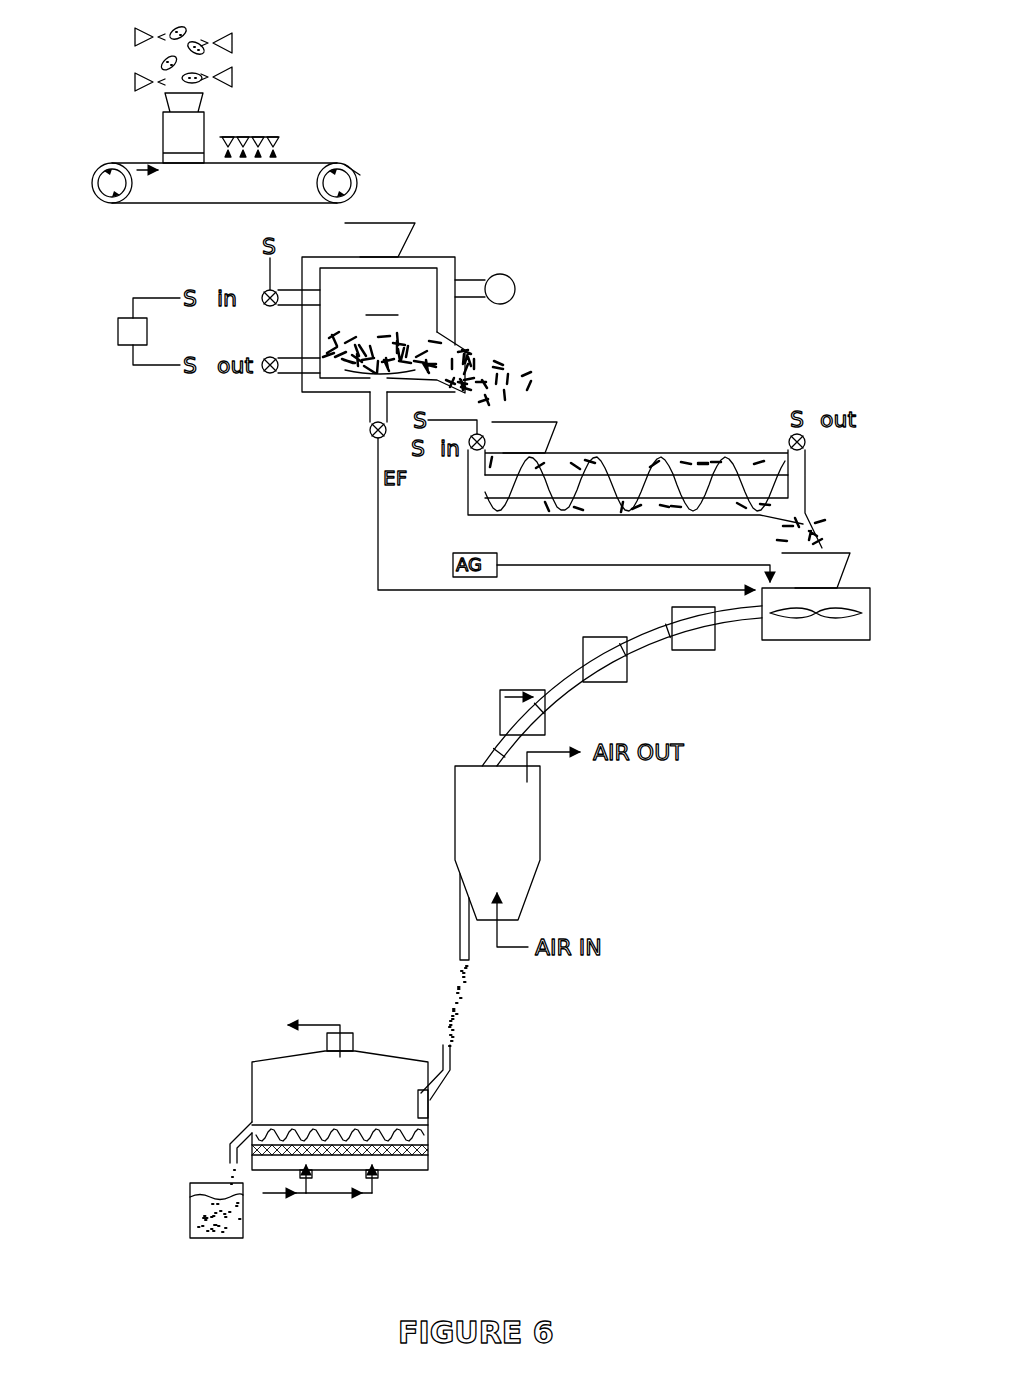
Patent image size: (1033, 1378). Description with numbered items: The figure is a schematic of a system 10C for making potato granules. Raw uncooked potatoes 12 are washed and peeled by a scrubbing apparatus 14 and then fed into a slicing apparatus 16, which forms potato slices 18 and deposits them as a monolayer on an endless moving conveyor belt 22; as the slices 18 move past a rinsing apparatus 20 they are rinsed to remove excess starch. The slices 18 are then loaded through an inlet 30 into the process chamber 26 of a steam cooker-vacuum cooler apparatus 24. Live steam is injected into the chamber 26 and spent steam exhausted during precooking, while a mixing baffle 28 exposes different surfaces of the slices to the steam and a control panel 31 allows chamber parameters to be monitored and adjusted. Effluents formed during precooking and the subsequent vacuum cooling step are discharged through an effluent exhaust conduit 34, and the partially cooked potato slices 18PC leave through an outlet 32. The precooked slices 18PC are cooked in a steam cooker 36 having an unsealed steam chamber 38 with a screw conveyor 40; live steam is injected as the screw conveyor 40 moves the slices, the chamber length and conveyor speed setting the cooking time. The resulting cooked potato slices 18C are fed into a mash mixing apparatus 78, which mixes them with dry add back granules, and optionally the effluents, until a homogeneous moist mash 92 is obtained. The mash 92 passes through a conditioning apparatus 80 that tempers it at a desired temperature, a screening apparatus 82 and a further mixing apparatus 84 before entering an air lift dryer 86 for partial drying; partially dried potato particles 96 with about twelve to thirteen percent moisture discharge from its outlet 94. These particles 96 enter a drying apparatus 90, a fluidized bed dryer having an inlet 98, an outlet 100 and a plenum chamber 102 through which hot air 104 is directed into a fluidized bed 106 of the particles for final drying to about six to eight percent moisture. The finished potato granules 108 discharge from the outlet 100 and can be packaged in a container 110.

The system 10C is at (653, 212).
The raw potatoes 12 is at (182, 33).
The scrubbing apparatus 14 is at (232, 50).
The slicing apparatus 16 is at (170, 138).
The potato slices 18 is at (213, 162).
The partially cooked potato slices 18PC is at (333, 352).
The cooked potato slices 18C is at (815, 548).
The rinsing apparatus 20 is at (253, 137).
The conveyor belt 22 is at (312, 163).
The steam cooker-vacuum cooler apparatus 24 is at (455, 257).
The process chamber 26 is at (382, 302).
The mixing baffle 28 is at (352, 380).
The inlet 30 is at (400, 225).
The control panel 31 is at (125, 332).
The outlet 32 is at (455, 340).
The effluent exhaust conduit 34 is at (370, 430).
The steam cooker 36 is at (728, 453).
The steam chamber 38 is at (640, 505).
The screw conveyor 40 is at (582, 508).
The mash mixing apparatus 78 is at (808, 630).
The conditioning apparatus 80 is at (685, 648).
The screening apparatus 82 is at (605, 680).
The mixing apparatus 84 is at (505, 710).
The cyclone separator 86 is at (540, 835).
The drying apparatus 90 is at (252, 1080).
The mash 92 is at (488, 755).
The outlet 94 is at (460, 925).
The partially dried potato particles 96 is at (455, 1010).
The inlet 98 is at (455, 1075).
The outlet 100 is at (235, 1140).
The plenum chamber 102 is at (410, 1163).
The hot air 104 is at (318, 1024).
The fluidized bed 106 is at (300, 1135).
The potato granules 108 is at (202, 1196).
The container 110 is at (190, 1225).